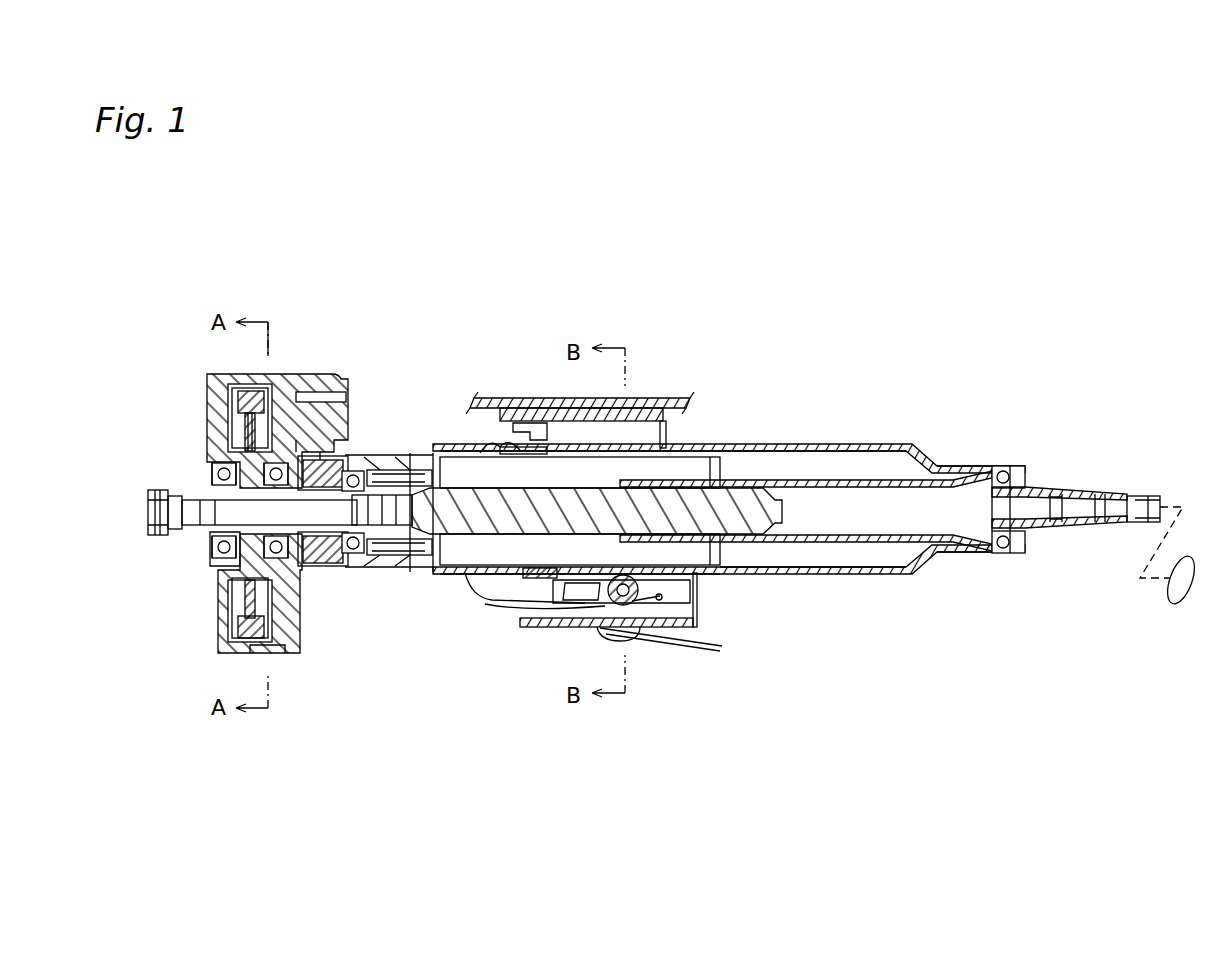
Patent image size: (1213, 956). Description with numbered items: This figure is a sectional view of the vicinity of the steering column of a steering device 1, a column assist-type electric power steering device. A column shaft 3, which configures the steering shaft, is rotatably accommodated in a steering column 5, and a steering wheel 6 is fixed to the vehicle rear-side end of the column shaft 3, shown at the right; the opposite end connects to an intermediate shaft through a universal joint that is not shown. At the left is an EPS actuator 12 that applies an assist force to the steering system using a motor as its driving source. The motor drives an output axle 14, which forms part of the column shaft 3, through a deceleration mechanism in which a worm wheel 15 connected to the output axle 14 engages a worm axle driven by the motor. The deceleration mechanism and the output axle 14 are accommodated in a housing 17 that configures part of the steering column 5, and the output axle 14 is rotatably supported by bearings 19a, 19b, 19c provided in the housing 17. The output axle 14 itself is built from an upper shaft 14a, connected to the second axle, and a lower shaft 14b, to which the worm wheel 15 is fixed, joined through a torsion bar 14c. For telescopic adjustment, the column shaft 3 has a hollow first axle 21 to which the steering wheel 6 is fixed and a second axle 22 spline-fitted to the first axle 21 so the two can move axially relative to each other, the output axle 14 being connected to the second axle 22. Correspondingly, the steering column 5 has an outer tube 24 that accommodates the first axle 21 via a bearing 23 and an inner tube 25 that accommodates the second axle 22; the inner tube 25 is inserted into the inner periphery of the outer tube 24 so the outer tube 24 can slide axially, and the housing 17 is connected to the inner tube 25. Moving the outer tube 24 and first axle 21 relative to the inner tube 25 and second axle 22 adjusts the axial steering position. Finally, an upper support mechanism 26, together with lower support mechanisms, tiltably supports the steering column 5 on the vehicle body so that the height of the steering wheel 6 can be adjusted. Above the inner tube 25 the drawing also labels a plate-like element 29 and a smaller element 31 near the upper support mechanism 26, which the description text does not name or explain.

The steering device 1 is at (1040, 268).
The column shaft 3 is at (1042, 470).
The steering column 5 is at (875, 430).
The steering wheel 6 is at (1176, 601).
The EPS actuator 12 is at (283, 364).
The output axle 14 is at (146, 492).
The upper shaft 14a is at (371, 467).
The lower shaft 14b is at (183, 496).
The torsion bar 14c is at (183, 540).
The worm wheel 15 is at (240, 655).
The housing 17 is at (321, 380).
The bearing 19a is at (352, 568).
The bearing 19b is at (307, 580).
The bearing 19c is at (215, 573).
The first axle 21 is at (848, 541).
The second axle 22 is at (460, 536).
The bearing 23 is at (1000, 470).
The outer tube 24 is at (786, 447).
The inner tube 25 is at (694, 452).
The upper support mechanism 26 is at (640, 400).
The mounting plate 29 is at (487, 398).
The clip 31 is at (532, 410).